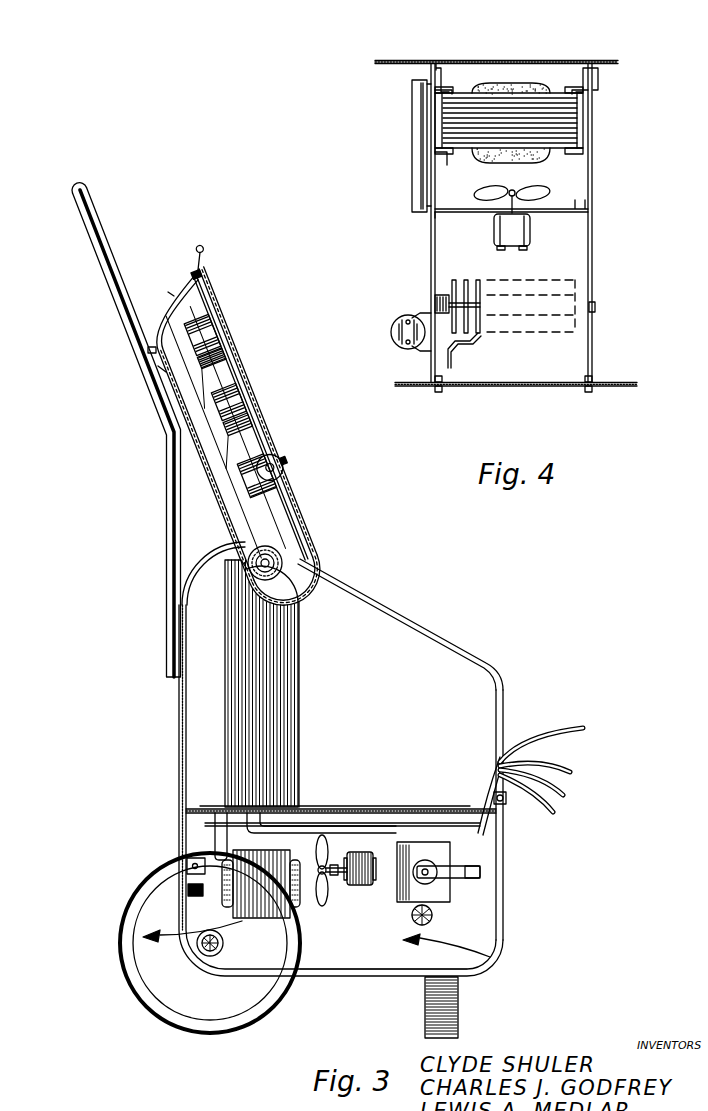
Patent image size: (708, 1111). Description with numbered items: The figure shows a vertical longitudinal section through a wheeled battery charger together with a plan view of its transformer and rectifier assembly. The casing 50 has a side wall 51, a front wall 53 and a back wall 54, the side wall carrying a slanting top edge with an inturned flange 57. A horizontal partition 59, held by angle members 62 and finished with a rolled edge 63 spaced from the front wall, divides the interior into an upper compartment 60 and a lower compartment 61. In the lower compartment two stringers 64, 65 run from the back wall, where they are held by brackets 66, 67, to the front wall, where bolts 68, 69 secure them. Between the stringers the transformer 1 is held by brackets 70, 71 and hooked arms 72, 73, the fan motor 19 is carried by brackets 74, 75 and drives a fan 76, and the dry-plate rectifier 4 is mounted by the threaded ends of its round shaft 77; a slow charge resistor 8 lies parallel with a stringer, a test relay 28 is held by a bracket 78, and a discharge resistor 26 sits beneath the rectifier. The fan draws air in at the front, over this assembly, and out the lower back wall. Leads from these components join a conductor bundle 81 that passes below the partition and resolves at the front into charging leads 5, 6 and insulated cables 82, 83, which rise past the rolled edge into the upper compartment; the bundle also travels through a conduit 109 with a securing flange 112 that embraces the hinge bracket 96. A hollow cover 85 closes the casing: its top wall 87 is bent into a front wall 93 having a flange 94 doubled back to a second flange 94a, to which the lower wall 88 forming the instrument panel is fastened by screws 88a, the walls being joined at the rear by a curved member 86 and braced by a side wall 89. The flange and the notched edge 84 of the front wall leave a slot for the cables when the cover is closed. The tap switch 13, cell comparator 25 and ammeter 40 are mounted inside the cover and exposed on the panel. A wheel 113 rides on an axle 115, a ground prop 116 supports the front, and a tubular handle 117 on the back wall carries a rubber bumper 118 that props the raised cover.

In FIG. 4, the transformer 1 is at (583, 125).
In FIG. 3, the transformer 1 is at (232, 912).
In FIG. 4, the dry-plate rectifier 4 is at (566, 291).
In FIG. 3, the dry-plate rectifier 4 is at (447, 903).
In FIG. 3, the charging lead 5 is at (562, 762).
In FIG. 3, the charging lead 6 is at (568, 782).
In FIG. 4, the slow charge resistor 8 is at (417, 121).
In FIG. 3, the tap switch 13 is at (280, 456).
In FIG. 4, the fan motor 19 is at (532, 243).
In FIG. 3, the fan motor 19 is at (372, 882).
In FIG. 3, the cell comparator 25 is at (226, 336).
In FIG. 3, the discharge resistor 26 is at (432, 918).
In FIG. 4, the test relay 28 is at (393, 326).
In FIG. 3, the ammeter 40 is at (252, 400).
In FIG. 3, the casing 50 is at (172, 753).
In FIG. 3, the side wall 51 is at (384, 714).
In FIG. 4, the front wall 53 is at (548, 388).
In FIG. 3, the front wall 53 is at (500, 898).
In FIG. 4, the back wall 54 is at (515, 61).
In FIG. 3, the back wall 54 is at (179, 725).
In FIG. 3, the inturned flange 57 is at (385, 602).
In FIG. 3, the partition 59 is at (312, 808).
In FIG. 3, the upper compartment 60 is at (438, 664).
In FIG. 3, the lower compartment 61 is at (371, 962).
In FIG. 3, the angle member 62 is at (178, 820).
In FIG. 3, the rolled edge 63 is at (478, 802).
In FIG. 4, the stringer 64 is at (431, 255).
In FIG. 3, the stringer 64 is at (305, 878).
In FIG. 4, the stringer 65 is at (594, 236).
In FIG. 4, the bracket 66 is at (468, 62).
In FIG. 4, the bracket 67 is at (600, 62).
In FIG. 4, the bolt 68 is at (445, 392).
In FIG. 4, the bolt 69 is at (592, 392).
In FIG. 4, the bracket 70 is at (442, 92).
In FIG. 4, the bracket 71 is at (584, 100).
In FIG. 4, the hooked arm 72 is at (445, 163).
In FIG. 4, the hooked arm 73 is at (586, 155).
In FIG. 4, the bracket 74 is at (460, 215).
In FIG. 4, the bracket 75 is at (578, 210).
In FIG. 4, the fan 76 is at (514, 192).
In FIG. 3, the fan 76 is at (323, 902).
In FIG. 4, the round shaft 77 is at (580, 313).
In FIG. 4, the bracket 78 is at (418, 356).
In FIG. 3, the conductor bundle 81 is at (420, 822).
In FIG. 3, the insulated cable 82 is at (552, 727).
In FIG. 3, the insulated cable 83 is at (562, 810).
In FIG. 3, the notched edge 84 is at (516, 788).
In FIG. 3, the hollow cover 85 is at (150, 350).
In FIG. 3, the curved member 86 is at (296, 600).
In FIG. 3, the top wall 87 is at (162, 370).
In FIG. 3, the lower wall 88 is at (230, 366).
In FIG. 3, the screw 88a is at (204, 268).
In FIG. 3, the side wall 89 is at (192, 307).
In FIG. 3, the front wall 93 is at (170, 292).
In FIG. 3, the flange 94 is at (206, 254).
In FIG. 3, the second flange 94a is at (200, 274).
In FIG. 3, the bracket 96 is at (226, 580).
In FIG. 3, the conduit 109 is at (282, 714).
In FIG. 3, the flange 112 is at (298, 656).
In FIG. 3, the wheel 113 is at (121, 968).
In FIG. 3, the axle 115 is at (198, 945).
In FIG. 3, the ground prop 116 is at (460, 1030).
In FIG. 3, the tubular handle 117 is at (118, 328).
In FIG. 3, the rubber bumper 118 is at (168, 382).